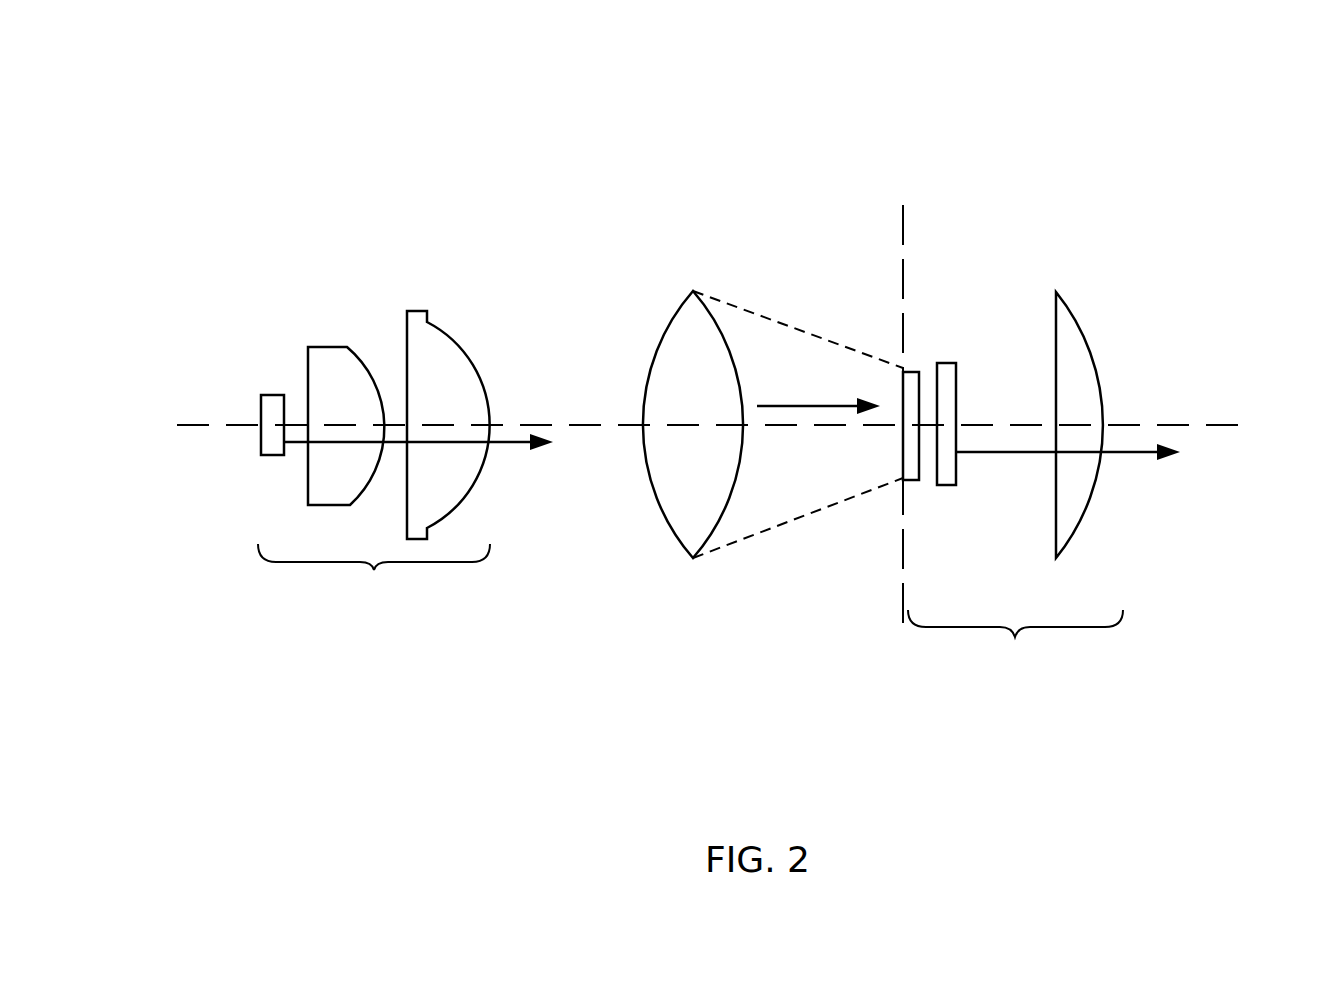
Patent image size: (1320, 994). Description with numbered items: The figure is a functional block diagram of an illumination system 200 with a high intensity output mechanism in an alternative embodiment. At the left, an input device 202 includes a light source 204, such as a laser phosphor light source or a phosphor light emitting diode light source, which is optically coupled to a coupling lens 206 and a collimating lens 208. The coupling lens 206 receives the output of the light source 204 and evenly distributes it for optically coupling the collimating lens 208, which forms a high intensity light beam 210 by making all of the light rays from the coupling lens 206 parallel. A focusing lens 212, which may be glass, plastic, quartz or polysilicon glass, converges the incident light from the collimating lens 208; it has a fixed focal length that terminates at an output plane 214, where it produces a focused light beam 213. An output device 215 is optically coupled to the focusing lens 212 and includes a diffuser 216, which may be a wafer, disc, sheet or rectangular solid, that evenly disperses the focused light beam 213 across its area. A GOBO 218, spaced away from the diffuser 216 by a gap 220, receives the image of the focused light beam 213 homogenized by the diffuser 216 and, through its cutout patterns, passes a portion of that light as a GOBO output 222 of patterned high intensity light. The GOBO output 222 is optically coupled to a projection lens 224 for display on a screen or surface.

The illumination system 200 is at (477, 142).
The input device 202 is at (374, 570).
The light source 204 is at (272, 423).
The coupling lens 206 is at (345, 368).
The collimating lens 208 is at (448, 368).
The high intensity light beam 210 is at (517, 443).
The focusing lens 212 is at (683, 508).
The focused light beam 213 is at (813, 403).
The output plane 214 is at (903, 287).
The output device 215 is at (1015, 637).
The diffuser 216 is at (912, 458).
The GOBO 218 is at (947, 385).
The gap 220 is at (927, 385).
The GOBO output 222 is at (1015, 452).
The projection lens 224 is at (1077, 478).